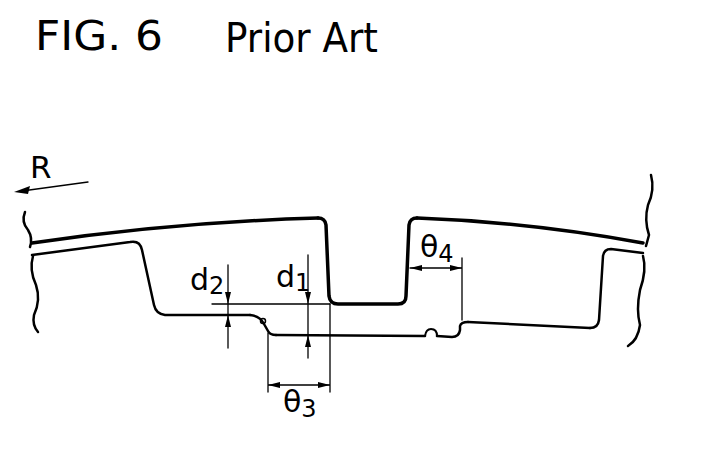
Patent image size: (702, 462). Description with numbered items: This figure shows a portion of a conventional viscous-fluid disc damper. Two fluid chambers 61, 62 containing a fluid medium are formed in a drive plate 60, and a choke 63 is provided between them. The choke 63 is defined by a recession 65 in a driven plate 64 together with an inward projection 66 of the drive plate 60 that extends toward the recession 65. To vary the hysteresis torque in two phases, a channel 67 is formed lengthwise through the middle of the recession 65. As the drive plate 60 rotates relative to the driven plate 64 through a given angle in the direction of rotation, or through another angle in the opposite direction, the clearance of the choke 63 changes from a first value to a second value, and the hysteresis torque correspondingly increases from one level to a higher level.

The drive plate 60 is at (434, 212).
The fluid chamber 61 is at (180, 250).
The fluid chamber 62 is at (515, 265).
The choke 63 is at (372, 322).
The driven plate 64 is at (520, 362).
The recession 65 is at (430, 343).
The inward projection 66 is at (357, 262).
The channel 67 is at (260, 328).